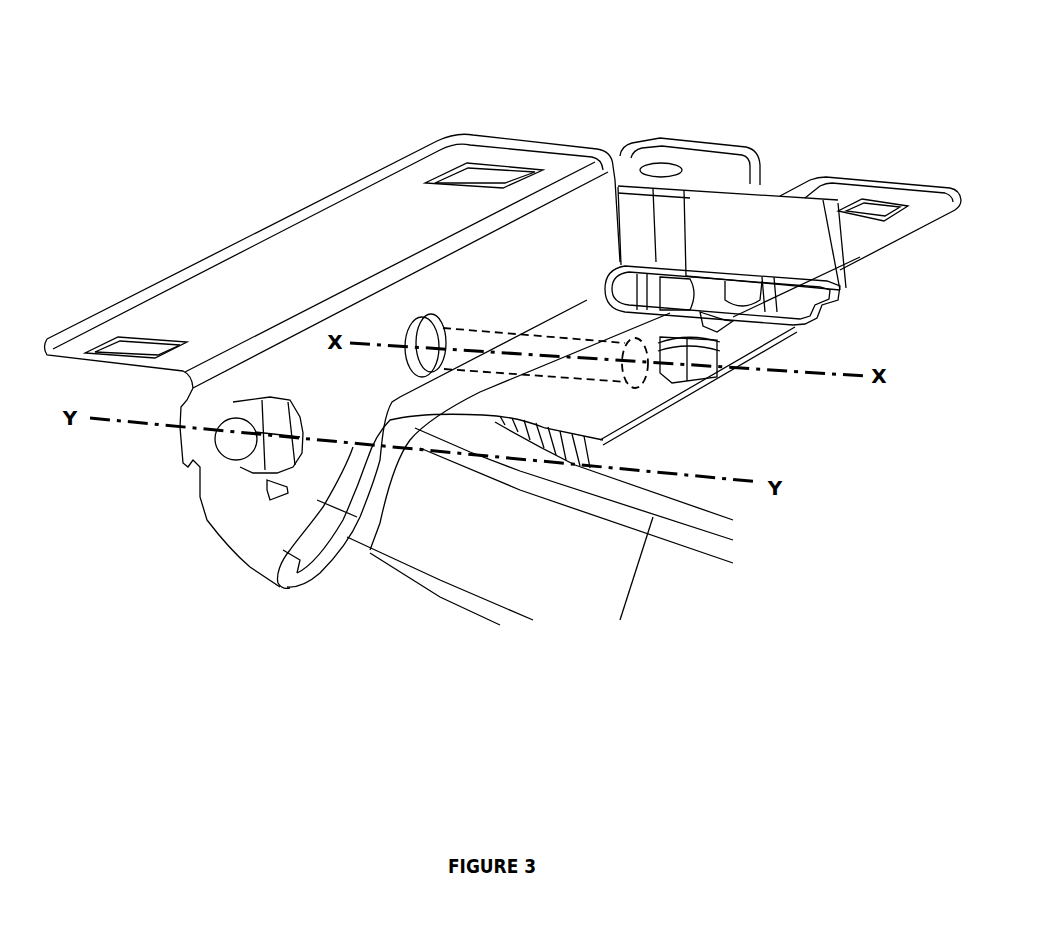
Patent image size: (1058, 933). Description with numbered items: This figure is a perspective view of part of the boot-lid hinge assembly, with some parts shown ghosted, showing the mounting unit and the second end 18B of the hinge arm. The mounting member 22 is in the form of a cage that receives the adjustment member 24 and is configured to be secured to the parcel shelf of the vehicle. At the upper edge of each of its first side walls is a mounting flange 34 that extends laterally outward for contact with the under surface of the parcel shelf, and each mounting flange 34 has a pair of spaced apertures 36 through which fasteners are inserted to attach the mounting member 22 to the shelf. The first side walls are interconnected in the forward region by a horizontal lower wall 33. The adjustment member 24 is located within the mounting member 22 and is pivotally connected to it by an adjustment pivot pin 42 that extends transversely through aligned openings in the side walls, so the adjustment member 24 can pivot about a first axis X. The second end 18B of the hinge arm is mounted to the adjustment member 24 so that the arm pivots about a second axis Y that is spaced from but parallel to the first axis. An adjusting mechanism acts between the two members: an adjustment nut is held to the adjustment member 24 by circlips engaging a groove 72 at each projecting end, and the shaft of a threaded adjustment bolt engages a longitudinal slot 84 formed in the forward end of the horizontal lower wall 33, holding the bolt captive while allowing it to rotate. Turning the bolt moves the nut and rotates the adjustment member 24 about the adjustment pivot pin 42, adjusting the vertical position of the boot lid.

The mounting member 22 is at (345, 198).
The mounting flange 34 is at (263, 280).
The apertures 36 is at (137, 342).
The adjustment member 24 is at (733, 186).
The horizontal lower wall 33 is at (790, 327).
The groove 72 is at (663, 278).
The longitudinal slot 84 is at (720, 332).
The adjustment pivot pin 42 is at (420, 367).
The second end of the hinge arm 18B is at (457, 547).